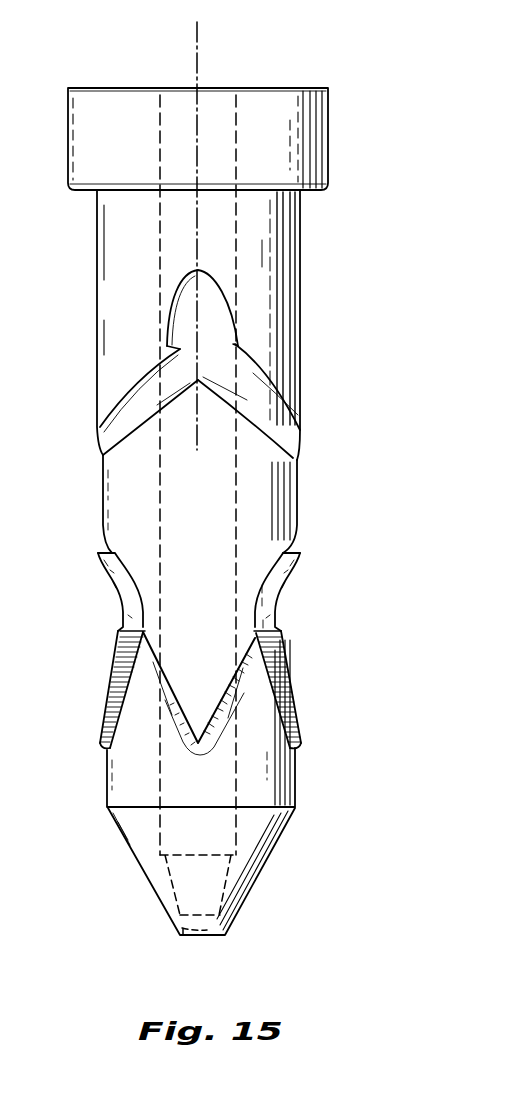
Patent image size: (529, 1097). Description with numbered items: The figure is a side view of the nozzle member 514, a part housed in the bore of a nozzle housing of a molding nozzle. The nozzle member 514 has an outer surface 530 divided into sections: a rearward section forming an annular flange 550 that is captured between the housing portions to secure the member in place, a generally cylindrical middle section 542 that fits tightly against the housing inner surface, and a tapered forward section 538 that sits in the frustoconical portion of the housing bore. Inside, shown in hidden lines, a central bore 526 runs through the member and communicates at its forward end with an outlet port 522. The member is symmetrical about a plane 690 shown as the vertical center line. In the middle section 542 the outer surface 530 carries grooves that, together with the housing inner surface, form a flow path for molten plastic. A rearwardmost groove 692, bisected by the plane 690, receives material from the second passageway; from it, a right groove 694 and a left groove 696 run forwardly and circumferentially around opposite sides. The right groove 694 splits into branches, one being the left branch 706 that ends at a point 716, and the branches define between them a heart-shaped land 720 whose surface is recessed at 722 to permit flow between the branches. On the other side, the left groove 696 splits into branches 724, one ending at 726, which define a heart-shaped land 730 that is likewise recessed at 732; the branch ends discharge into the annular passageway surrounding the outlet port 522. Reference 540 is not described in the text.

The plane 690 is at (198, 35).
The annular flange 550 is at (305, 133).
The nozzle assembly 540 is at (58, 152).
The nozzle member 514 is at (103, 240).
The outer surface 530 is at (272, 228).
The rearwardmost groove 692 is at (213, 303).
The left groove 696 is at (125, 383).
The right groove 694 is at (270, 392).
The middle section 542 is at (92, 493).
The heart-shaped land 730 is at (100, 563).
The recess 732 is at (118, 608).
The branch of left groove 724 is at (118, 655).
The end of branch 726 is at (92, 742).
The heart-shaped land 720 is at (298, 558).
The recess 722 is at (283, 610).
The left branch 706 is at (282, 657).
The point 716 is at (312, 758).
The forward section 538 is at (137, 875).
The central bore 526 is at (170, 855).
The outlet port 522 is at (204, 939).